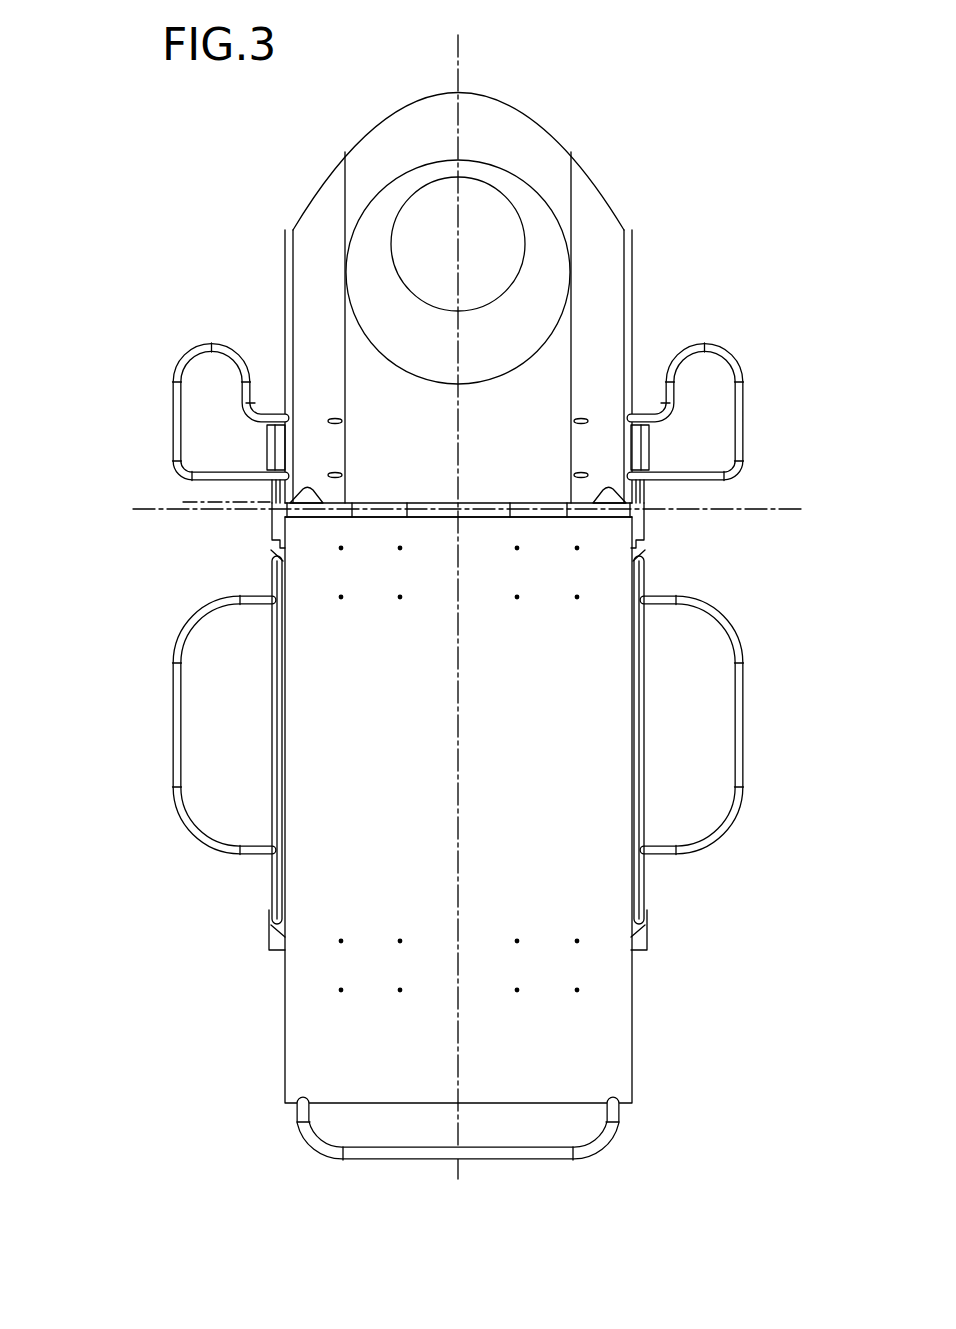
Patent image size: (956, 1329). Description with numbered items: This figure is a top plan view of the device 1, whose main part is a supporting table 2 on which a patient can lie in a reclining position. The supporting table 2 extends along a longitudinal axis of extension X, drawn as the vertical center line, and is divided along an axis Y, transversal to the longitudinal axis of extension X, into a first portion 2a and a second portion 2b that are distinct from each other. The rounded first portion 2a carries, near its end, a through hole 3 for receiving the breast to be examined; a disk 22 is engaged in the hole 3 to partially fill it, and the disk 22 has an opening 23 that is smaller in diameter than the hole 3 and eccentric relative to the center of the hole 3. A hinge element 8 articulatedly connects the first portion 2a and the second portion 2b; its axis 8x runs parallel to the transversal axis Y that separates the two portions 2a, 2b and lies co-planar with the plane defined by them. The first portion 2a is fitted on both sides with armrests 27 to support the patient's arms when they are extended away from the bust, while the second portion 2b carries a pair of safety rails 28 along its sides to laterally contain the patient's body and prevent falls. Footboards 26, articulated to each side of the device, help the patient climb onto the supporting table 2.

The device 1 is at (218, 268).
The supporting table 2 is at (593, 548).
The first portion 2a is at (520, 447).
The second portion 2b is at (391, 808).
The through hole 3 is at (562, 312).
The hinge element 8 is at (318, 503).
The axis of the hinge element 8x is at (166, 508).
The disk 22 is at (429, 348).
The opening 23 is at (390, 248).
The footboards 26 is at (238, 728).
The armrests 27 is at (177, 410).
The safety rails 28 is at (645, 650).
The longitudinal axis of extension X is at (458, 1085).
The transversal axis Y is at (702, 503).